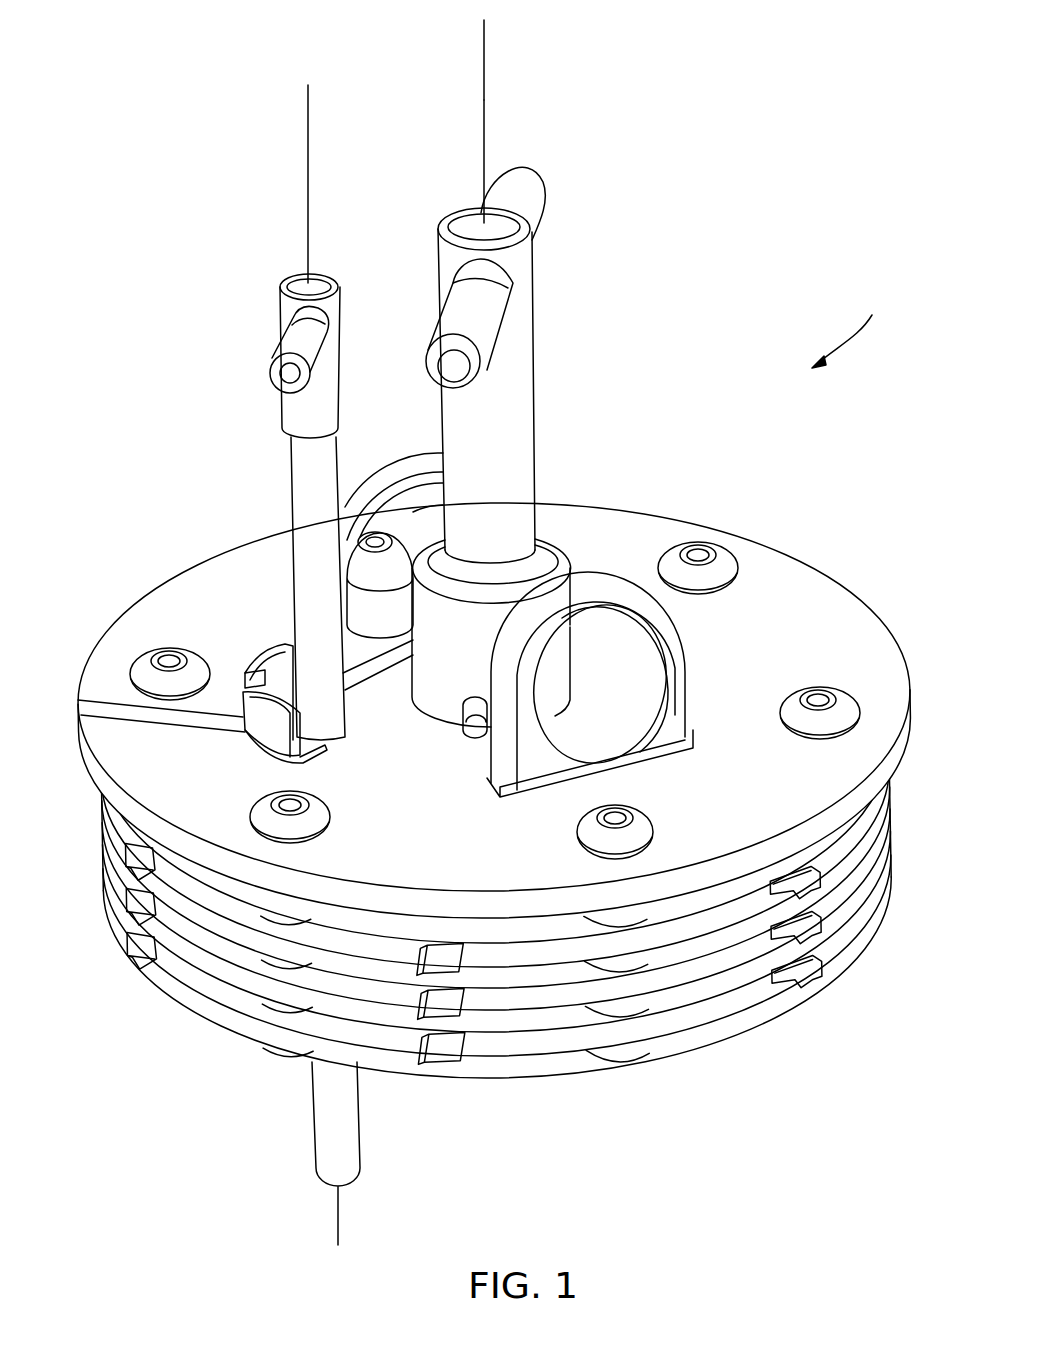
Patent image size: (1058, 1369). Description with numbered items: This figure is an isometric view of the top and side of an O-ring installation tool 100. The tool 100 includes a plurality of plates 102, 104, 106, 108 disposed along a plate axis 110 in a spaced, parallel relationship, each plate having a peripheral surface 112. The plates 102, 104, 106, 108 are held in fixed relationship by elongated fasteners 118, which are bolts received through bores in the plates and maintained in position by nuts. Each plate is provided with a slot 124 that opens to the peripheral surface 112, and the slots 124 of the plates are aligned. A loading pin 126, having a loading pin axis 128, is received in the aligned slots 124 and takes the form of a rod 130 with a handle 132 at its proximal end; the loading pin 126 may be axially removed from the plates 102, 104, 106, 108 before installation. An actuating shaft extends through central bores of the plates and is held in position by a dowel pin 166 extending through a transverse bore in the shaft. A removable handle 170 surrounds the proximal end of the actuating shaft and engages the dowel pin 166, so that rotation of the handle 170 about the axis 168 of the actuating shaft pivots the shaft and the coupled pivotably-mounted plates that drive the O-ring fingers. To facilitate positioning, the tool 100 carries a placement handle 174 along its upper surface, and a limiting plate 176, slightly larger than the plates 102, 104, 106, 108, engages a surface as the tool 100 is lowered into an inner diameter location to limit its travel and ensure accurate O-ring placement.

The tool 100 is at (851, 325).
The plate 102 is at (866, 815).
The plate 104 is at (866, 850).
The plate 106 is at (866, 895).
The plate 108 is at (866, 940).
The plate axis 110 is at (488, 100).
The peripheral surface 112 is at (730, 1022).
The elongated fasteners 118 is at (838, 708).
The slot 124 is at (90, 707).
The loading pin 126 is at (292, 484).
The loading pin axis 128 is at (310, 146).
The rod 130 is at (343, 447).
The handle 132 is at (328, 260).
The dowel pin 166 is at (478, 730).
The axis 168 is at (488, 40).
The handle 170 is at (534, 352).
The placement handle 174 is at (690, 655).
The limiting plate 176 is at (893, 762).